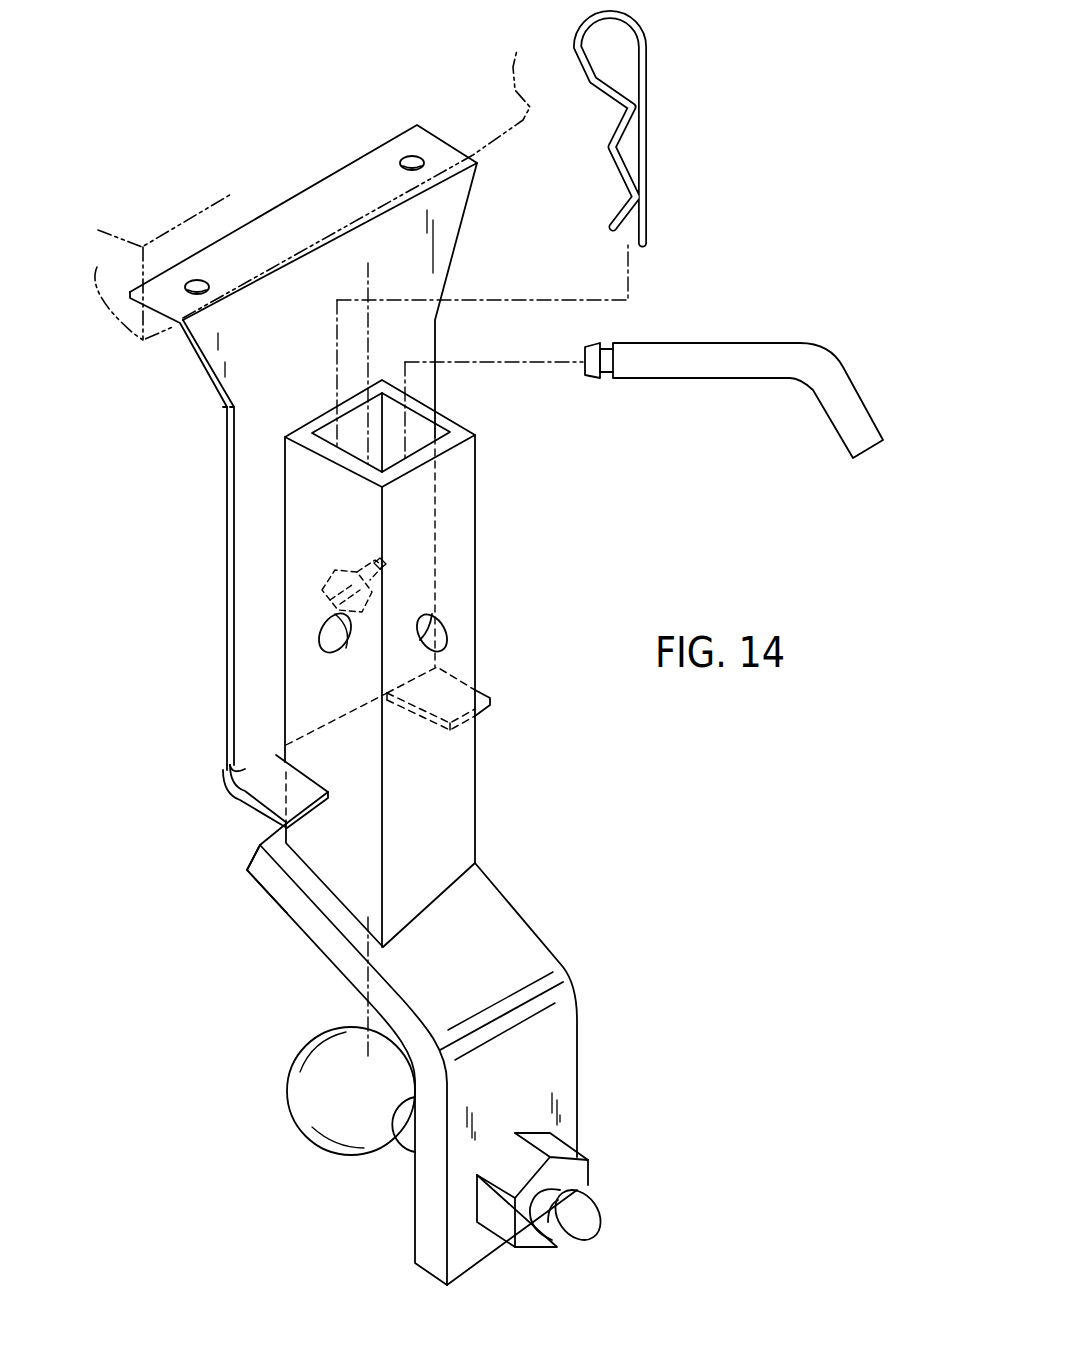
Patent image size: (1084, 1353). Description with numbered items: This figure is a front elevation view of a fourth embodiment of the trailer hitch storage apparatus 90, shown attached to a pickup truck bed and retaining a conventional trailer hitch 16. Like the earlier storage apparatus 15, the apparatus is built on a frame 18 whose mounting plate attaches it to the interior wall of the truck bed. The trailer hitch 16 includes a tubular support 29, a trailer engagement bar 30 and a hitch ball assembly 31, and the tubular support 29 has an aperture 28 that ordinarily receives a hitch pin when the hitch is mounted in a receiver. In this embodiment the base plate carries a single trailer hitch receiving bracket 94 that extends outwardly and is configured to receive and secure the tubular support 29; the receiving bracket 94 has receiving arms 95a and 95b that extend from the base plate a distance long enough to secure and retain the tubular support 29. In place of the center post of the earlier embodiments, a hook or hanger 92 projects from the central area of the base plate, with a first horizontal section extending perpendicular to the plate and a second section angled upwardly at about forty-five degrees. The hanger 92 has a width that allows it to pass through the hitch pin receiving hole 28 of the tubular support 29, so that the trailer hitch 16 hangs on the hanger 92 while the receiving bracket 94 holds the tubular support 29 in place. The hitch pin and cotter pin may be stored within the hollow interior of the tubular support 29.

The trailer hitch storage apparatus 15 is at (366, 278).
The trailer hitch 16 is at (507, 889).
The frame 18 is at (216, 573).
The aperture 28 is at (343, 560).
The tubular support 29 is at (468, 538).
The trailer engagement bar 30 is at (567, 1018).
The hitch ball assembly 31 is at (343, 1140).
The trailer hitch storage apparatus 90 is at (165, 436).
The hanger 92 is at (315, 601).
The trailer hitch receiving bracket 94 is at (246, 813).
The receiving arm 95a is at (258, 826).
The receiving arm 95b is at (483, 693).